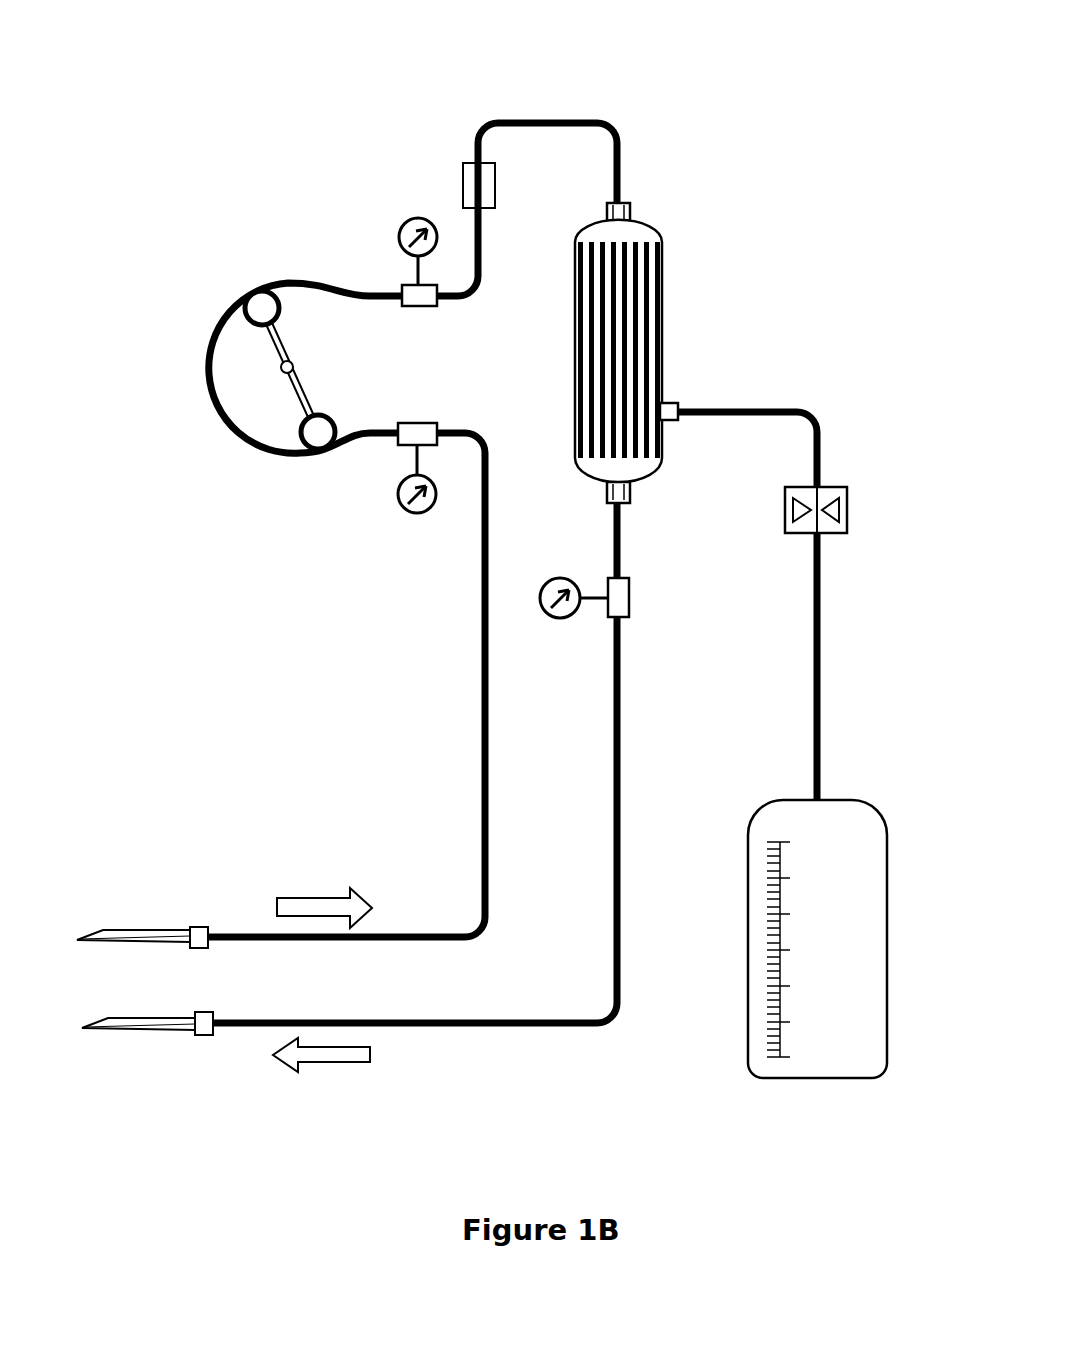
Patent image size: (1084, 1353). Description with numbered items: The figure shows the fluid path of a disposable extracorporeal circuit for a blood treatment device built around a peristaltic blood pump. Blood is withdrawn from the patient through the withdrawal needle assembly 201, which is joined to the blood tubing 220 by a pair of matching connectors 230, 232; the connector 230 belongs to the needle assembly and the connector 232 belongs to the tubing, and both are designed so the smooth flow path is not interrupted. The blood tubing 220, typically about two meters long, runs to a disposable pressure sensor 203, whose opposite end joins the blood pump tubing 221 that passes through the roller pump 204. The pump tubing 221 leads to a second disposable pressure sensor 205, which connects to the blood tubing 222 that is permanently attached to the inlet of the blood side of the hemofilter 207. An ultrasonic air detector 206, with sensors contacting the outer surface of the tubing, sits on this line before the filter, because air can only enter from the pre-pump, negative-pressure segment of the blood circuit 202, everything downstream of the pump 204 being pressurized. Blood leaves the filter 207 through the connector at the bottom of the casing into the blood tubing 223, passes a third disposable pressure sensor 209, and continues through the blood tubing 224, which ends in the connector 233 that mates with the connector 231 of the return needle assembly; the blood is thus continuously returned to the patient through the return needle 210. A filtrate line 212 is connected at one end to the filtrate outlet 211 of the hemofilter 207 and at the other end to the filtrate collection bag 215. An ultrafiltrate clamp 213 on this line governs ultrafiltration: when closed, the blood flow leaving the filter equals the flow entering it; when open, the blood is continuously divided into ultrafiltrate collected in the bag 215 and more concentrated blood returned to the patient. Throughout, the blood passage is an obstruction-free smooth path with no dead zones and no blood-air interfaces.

The withdrawal needle assembly 201 is at (158, 925).
The pre-pump segment of the blood circuit 202 is at (272, 613).
The disposable pressure sensor 203 is at (400, 505).
The roller pump 204 is at (281, 366).
The disposable pressure sensor 205 is at (398, 228).
The ultrasonic air detector 206 is at (463, 183).
The hemofilter 207 is at (657, 342).
The disposable pressure sensor 209 is at (558, 622).
The return needle 210 is at (160, 1042).
The filtrate outlet 211 is at (673, 400).
The filtrate line 212 is at (845, 440).
The ultrafiltrate clamp 213 is at (850, 507).
The filtrate collection bag 215 is at (860, 795).
The blood tubing 220 is at (482, 732).
The blood pump tubing 221 is at (215, 432).
The blood tubing 222 is at (517, 112).
The blood tubing 223 is at (625, 540).
The blood tubing 224 is at (583, 1030).
The connector 230 is at (192, 925).
The connector 231 is at (197, 1038).
The connector 232 is at (208, 922).
The connector 233 is at (215, 1038).